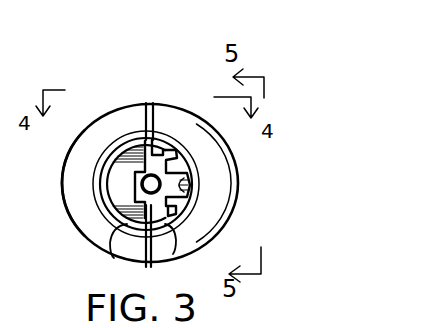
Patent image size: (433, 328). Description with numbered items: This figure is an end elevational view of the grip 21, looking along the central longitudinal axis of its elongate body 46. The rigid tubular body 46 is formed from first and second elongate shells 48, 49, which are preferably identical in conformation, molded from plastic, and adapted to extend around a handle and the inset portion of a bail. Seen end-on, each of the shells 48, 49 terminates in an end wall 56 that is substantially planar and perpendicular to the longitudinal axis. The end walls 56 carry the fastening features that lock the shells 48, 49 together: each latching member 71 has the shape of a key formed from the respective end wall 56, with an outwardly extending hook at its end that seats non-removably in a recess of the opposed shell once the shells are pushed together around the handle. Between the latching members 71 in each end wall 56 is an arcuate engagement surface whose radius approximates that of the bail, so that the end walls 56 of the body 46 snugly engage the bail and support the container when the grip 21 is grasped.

The grip 21 is at (181, 75).
The elongate body 46 is at (246, 178).
The first elongate shell 48 is at (68, 227).
The second elongate shell 49 is at (232, 225).
The end wall 56 is at (163, 155).
The latching member 71 is at (176, 154).